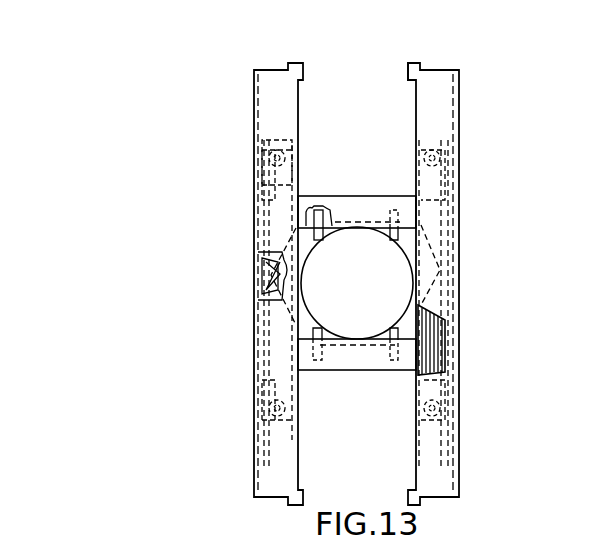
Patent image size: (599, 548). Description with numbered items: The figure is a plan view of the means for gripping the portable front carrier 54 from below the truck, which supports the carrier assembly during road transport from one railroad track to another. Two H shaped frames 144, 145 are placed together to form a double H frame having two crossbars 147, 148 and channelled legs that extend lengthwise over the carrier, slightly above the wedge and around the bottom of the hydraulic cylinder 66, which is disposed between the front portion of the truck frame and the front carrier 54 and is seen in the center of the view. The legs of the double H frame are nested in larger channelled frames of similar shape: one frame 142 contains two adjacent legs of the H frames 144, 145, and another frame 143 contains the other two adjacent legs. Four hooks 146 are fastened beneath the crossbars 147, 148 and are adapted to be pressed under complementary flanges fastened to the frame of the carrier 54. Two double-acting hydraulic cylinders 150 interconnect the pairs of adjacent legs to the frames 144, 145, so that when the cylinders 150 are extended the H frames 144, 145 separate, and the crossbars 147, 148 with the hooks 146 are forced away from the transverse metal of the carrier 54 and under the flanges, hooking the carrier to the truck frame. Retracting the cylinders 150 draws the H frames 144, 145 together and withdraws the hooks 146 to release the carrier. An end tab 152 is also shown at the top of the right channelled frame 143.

The front carrier 54 is at (178, 229).
The hydraulic cylinder 66 is at (388, 270).
The channelled frame 142 is at (272, 85).
The channelled frame 143 is at (458, 106).
The H shaped frame 144 is at (272, 268).
The H shaped frame 145 is at (270, 292).
The hooks 146 is at (318, 207).
The crossbar 147 is at (372, 195).
The crossbar 148 is at (340, 372).
The double-acting hydraulic cylinders 150 is at (277, 192).
The end tab 152 is at (408, 72).